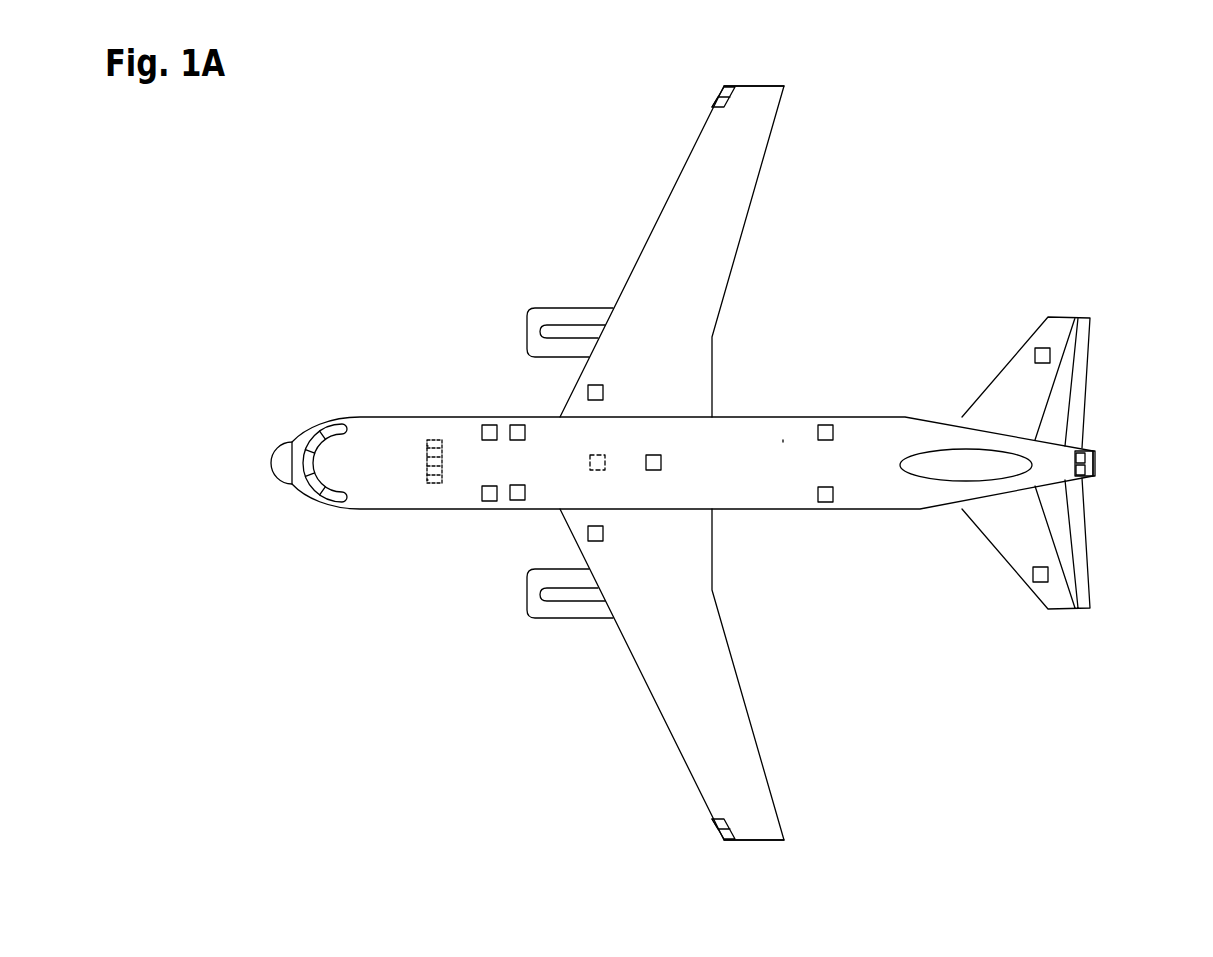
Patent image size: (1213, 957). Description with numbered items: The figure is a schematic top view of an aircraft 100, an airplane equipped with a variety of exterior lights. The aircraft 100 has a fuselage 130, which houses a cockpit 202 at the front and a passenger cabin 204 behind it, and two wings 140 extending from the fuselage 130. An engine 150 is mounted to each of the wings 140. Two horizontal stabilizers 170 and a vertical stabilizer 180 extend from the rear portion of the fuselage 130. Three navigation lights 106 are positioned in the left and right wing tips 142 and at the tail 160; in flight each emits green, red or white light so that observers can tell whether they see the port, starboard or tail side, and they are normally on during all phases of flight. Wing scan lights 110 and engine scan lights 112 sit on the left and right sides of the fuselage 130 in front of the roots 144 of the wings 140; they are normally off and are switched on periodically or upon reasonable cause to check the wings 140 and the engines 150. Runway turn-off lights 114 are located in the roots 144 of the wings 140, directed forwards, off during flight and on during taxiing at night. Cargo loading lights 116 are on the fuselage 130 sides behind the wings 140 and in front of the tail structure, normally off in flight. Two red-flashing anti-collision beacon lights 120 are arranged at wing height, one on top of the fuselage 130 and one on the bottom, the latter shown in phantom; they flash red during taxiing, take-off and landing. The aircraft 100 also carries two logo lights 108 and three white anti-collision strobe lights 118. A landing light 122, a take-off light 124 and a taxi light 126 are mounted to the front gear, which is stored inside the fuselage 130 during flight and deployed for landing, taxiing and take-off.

The aircraft 100 is at (1010, 206).
The navigation lights 106 is at (720, 97).
The logo lights 108 is at (1035, 355).
The wing scan lights 110 is at (482, 432).
The engine scan lights 112 is at (512, 425).
The runway turn-off lights 114 is at (603, 392).
The cargo loading lights 116 is at (826, 425).
The white anti-collision strobe lights 118 is at (716, 104).
The red-flashing anti-collision beacon lights 120 is at (598, 455).
The landing light 122 is at (427, 480).
The take-off light 124 is at (427, 446).
The taxi light 126 is at (427, 459).
The fuselage 130 is at (893, 498).
The wings 140 is at (778, 182).
The wing tips 142 is at (777, 73).
The roots 144 is at (544, 388).
The engine 150 is at (559, 294).
The tail 160 is at (1109, 426).
The horizontal stabilizers 170 is at (1110, 327).
The vertical stabilizer 180 is at (932, 462).
The cockpit 202 is at (302, 418).
The passenger cabin 204 is at (783, 440).